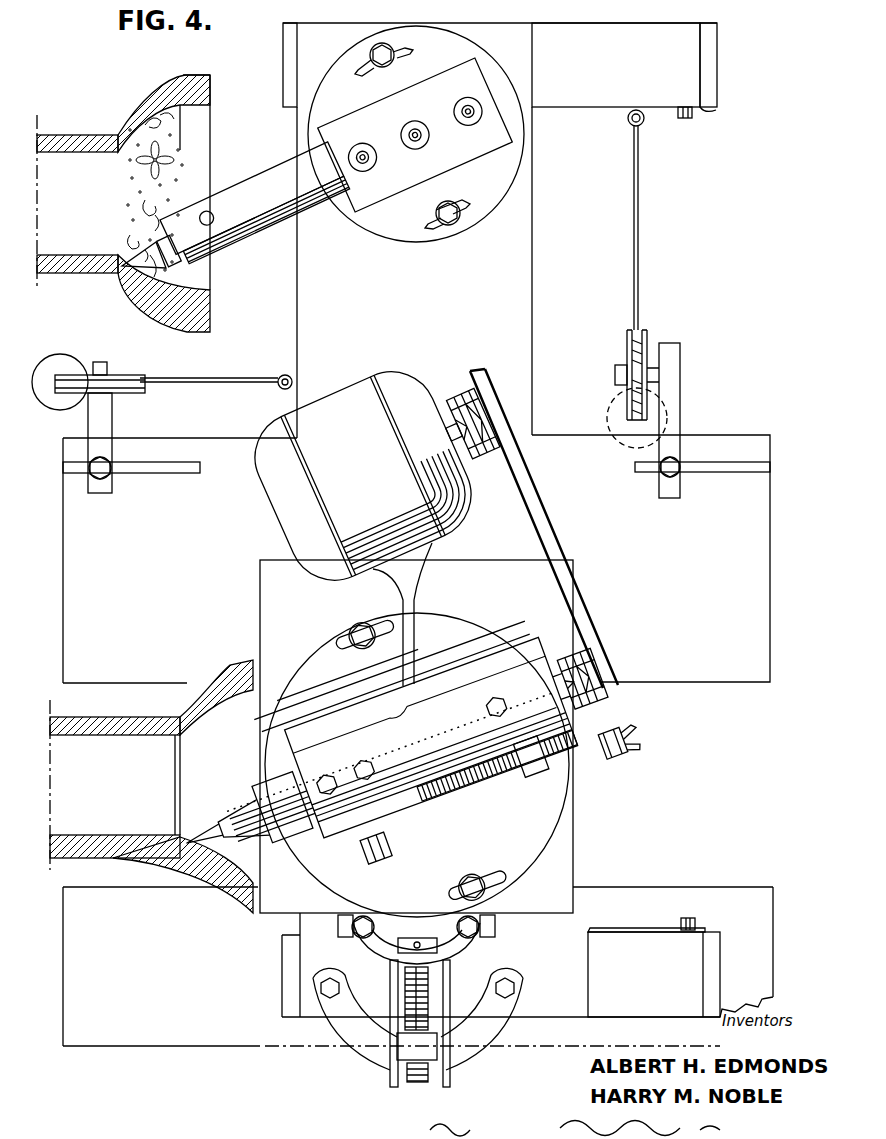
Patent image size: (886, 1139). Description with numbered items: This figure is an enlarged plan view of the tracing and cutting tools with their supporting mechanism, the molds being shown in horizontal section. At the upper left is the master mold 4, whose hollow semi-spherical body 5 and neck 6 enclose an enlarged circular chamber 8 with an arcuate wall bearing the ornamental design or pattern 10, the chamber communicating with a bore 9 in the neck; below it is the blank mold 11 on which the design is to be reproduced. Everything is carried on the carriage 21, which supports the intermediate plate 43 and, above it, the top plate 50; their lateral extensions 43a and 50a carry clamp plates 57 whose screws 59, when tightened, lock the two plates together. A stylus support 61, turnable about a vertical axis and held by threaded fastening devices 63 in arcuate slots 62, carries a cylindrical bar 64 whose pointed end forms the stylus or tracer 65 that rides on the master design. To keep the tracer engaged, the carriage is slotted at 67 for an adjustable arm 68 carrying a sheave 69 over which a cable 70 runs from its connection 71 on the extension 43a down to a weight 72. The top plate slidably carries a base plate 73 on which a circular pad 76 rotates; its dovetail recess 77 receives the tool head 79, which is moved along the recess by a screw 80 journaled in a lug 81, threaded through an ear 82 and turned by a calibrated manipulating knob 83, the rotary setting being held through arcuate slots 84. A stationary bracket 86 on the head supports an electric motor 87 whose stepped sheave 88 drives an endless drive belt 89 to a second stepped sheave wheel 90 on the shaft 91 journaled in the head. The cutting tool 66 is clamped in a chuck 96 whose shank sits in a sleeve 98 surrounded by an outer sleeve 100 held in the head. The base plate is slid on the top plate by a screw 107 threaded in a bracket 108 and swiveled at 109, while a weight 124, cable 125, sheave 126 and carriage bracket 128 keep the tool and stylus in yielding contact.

The master mold 4 is at (122, 102).
The hollow semi-spherical body 5 is at (158, 84).
The neck 6 is at (63, 135).
The circular chamber 8 is at (195, 128).
The bore 9 is at (137, 182).
The ornamental design or pattern 10 is at (185, 157).
The blank mold 11 is at (196, 674).
The carriage 21 is at (742, 682).
The intermediate plate 43 is at (712, 948).
The lateral extensions of the intermediate plate 43a is at (712, 84).
The top plate 50 is at (533, 290).
The lateral extensions of the top plate 50a is at (641, 63).
The clamp plates 57 is at (716, 110).
The screws 59 is at (685, 120).
The stylus support 61 is at (477, 160).
The arcuate slots 62 is at (408, 48).
The threaded fastening devices 63 is at (372, 52).
The cylindrical bar 64 is at (282, 218).
The stylus or tracer 65 is at (100, 285).
The cutting tool 66 is at (182, 838).
The slot 67 is at (723, 465).
The adjustable arm 68 is at (681, 427).
The sheave 69 is at (650, 335).
The cable 70 is at (640, 290).
The cable connection 71 is at (628, 125).
The weight 72 is at (607, 412).
The base plate 73 is at (260, 609).
The circular pad 76 is at (312, 652).
The dovetail recess 77 is at (280, 724).
The tool head 79 is at (380, 743).
The screw 80 is at (578, 783).
The lug 81 is at (365, 862).
The ear 82 is at (566, 800).
The calibrated manipulating knob 83 is at (628, 760).
The arcuate slots 84 is at (345, 628).
The stationary bracket 86 is at (415, 600).
The electric motor 87 is at (335, 482).
The stepped sheave 88 is at (465, 395).
The endless drive belt 89 is at (580, 580).
The second stepped sheave wheel 90 is at (600, 660).
The shaft 91 is at (558, 680).
The chuck 96 is at (210, 845).
The sleeve 98 is at (225, 808).
The sleeve 100 is at (248, 778).
The screw 107 is at (432, 988).
The bracket 108 is at (465, 1040).
The swivel connection 109 is at (372, 950).
The weight 124 is at (74, 362).
The cable 125 is at (210, 378).
The sheave 126 is at (125, 376).
The bracket 128 is at (113, 418).